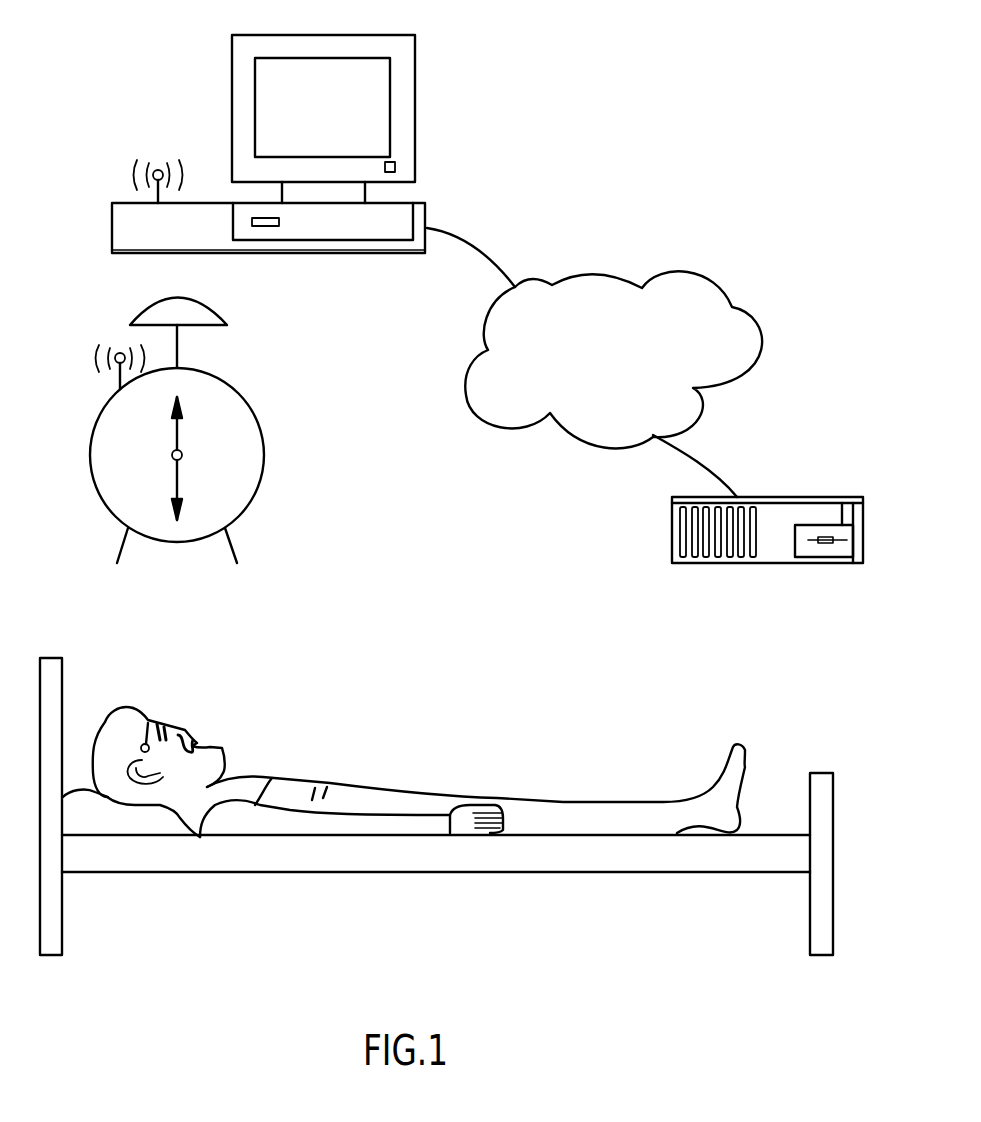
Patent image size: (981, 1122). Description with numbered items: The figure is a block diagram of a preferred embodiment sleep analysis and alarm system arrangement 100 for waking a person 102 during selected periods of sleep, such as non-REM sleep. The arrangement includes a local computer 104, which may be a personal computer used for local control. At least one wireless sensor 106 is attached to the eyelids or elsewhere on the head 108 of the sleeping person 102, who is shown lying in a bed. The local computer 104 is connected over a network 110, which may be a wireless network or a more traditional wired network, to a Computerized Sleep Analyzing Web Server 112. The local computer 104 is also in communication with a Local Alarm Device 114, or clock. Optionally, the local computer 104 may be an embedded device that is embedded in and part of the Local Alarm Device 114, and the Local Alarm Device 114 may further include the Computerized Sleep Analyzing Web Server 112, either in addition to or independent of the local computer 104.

The sleep analysis and alarm system arrangement 100 is at (432, 478).
The person 102 is at (570, 800).
The local computer 104 is at (415, 95).
The wireless sensor 106 is at (148, 720).
The head 108 is at (223, 737).
The network 110 is at (693, 277).
The Computerized Sleep Analyzing Web Server (C-SAWS) 112 is at (792, 497).
The Local Alarm Device (LAD) 114 is at (267, 447).